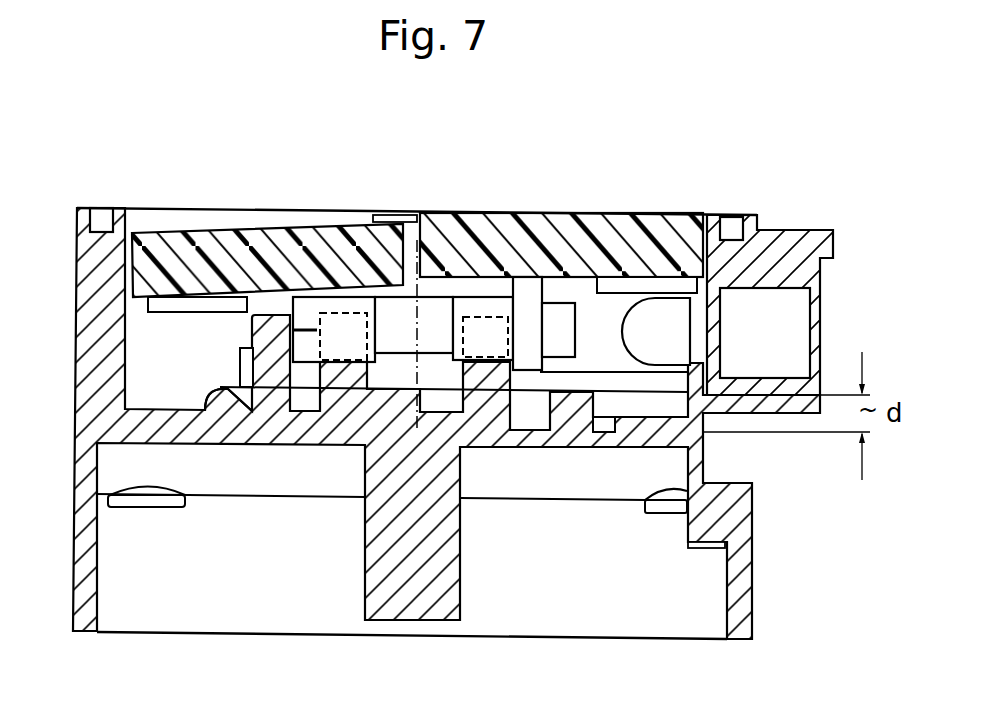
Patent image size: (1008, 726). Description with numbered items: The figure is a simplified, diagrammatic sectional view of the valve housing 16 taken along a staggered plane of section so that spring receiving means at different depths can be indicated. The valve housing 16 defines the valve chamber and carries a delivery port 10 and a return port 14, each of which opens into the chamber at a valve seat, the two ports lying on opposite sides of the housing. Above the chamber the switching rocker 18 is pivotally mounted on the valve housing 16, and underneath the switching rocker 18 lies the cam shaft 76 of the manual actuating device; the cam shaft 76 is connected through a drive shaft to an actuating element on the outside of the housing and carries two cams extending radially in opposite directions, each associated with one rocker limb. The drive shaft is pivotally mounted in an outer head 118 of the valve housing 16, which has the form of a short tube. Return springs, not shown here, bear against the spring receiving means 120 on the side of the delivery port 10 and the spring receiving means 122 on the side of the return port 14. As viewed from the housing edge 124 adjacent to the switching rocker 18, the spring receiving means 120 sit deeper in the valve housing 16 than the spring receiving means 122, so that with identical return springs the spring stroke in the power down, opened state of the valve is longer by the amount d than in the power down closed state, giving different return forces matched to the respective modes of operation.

The delivery port 10 is at (607, 597).
The return port 14 is at (222, 597).
The valve housing 16 is at (666, 184).
The switching rocker 18 is at (238, 252).
The cam shaft 76 is at (395, 317).
The outer head 118 is at (806, 253).
The spring receiving means 120 is at (600, 423).
The spring receiving means 122 is at (225, 396).
The housing edge 124 is at (84, 208).